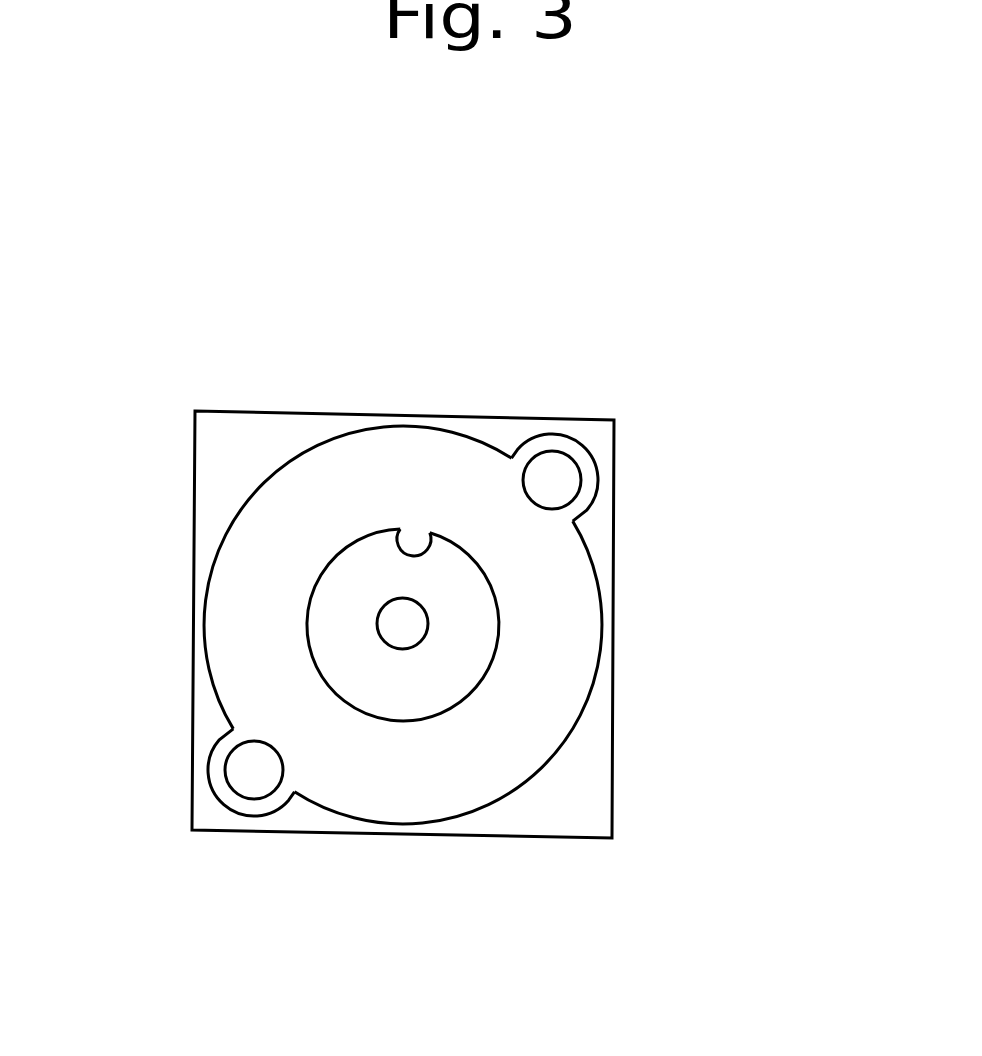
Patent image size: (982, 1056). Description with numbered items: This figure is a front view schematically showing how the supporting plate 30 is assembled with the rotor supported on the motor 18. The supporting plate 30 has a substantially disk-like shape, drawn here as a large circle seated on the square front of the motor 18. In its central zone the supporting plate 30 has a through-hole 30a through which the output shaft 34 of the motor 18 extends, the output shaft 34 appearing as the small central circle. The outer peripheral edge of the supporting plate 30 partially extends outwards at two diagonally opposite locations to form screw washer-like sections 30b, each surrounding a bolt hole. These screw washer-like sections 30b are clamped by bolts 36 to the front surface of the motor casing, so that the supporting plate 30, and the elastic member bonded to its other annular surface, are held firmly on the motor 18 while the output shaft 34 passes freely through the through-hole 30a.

The motor 18 is at (593, 770).
The supporting plate 30 is at (320, 493).
The through-hole 30a is at (430, 550).
The screw washer-like sections 30b is at (588, 490).
The output shaft 34 is at (410, 631).
The bolts 36 is at (552, 470).